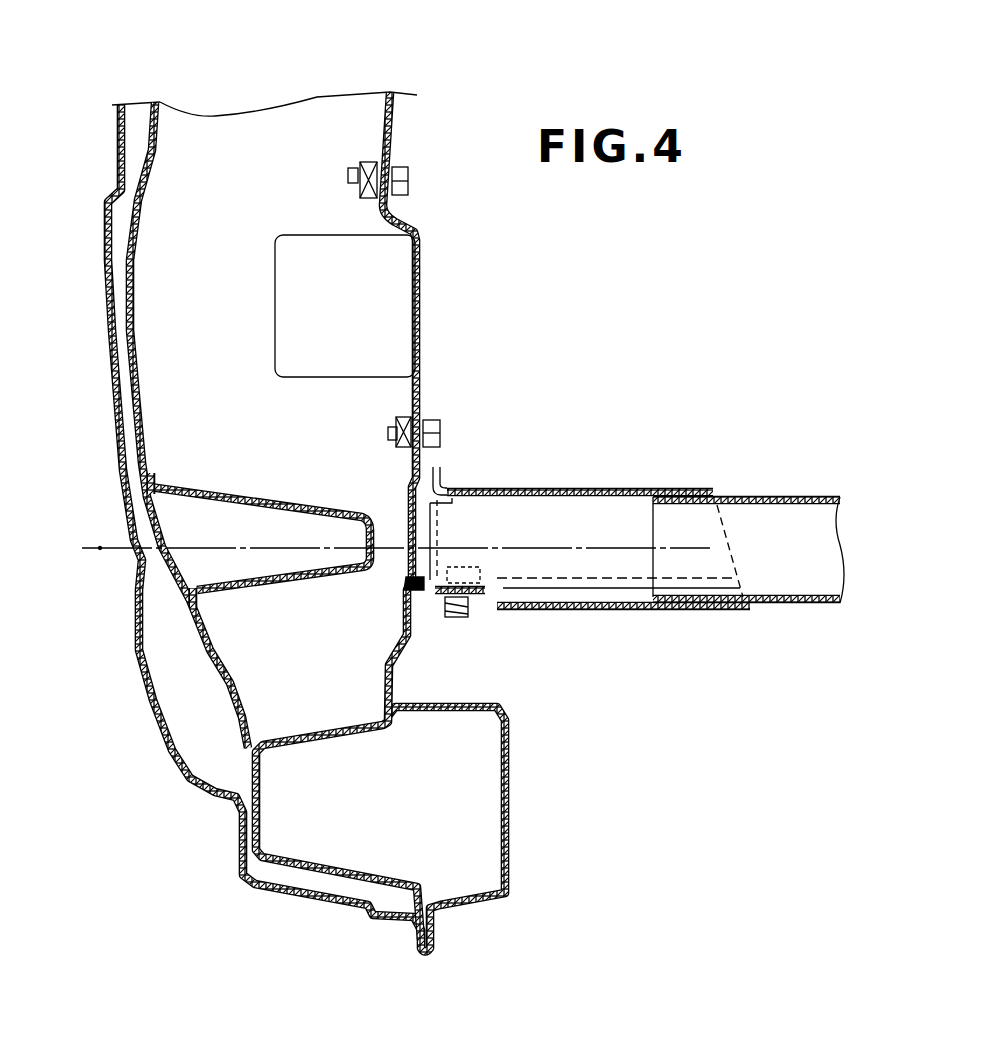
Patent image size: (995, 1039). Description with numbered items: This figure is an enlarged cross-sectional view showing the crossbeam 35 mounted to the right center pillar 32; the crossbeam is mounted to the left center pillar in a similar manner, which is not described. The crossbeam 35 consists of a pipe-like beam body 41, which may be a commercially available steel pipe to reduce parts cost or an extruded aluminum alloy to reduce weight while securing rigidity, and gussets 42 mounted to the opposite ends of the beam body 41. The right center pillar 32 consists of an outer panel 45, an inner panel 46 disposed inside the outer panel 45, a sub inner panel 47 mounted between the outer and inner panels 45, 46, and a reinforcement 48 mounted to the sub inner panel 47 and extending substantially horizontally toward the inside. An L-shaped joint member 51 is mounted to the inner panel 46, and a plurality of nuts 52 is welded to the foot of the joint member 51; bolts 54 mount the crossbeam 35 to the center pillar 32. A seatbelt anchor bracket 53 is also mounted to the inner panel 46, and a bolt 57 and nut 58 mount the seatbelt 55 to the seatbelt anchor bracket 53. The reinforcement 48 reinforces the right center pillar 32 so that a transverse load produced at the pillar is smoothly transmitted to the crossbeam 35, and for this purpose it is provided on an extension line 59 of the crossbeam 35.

The right center pillar 32 is at (114, 157).
The crossbeam 35 is at (698, 483).
The beam body 41 is at (803, 497).
The gusset 42 is at (563, 488).
The outer panel 45 is at (113, 322).
The inner panel 46 is at (400, 605).
The sub inner panel 47 is at (222, 670).
The reinforcement 48 is at (220, 492).
The joint member 51 is at (432, 592).
The nut 52 is at (472, 605).
The seatbelt anchor bracket 53 is at (404, 463).
The bolt 54 is at (478, 587).
The seatbelt 55 is at (300, 233).
The bolt 57 is at (432, 413).
The nut 58 is at (392, 414).
The extension line 59 is at (100, 549).